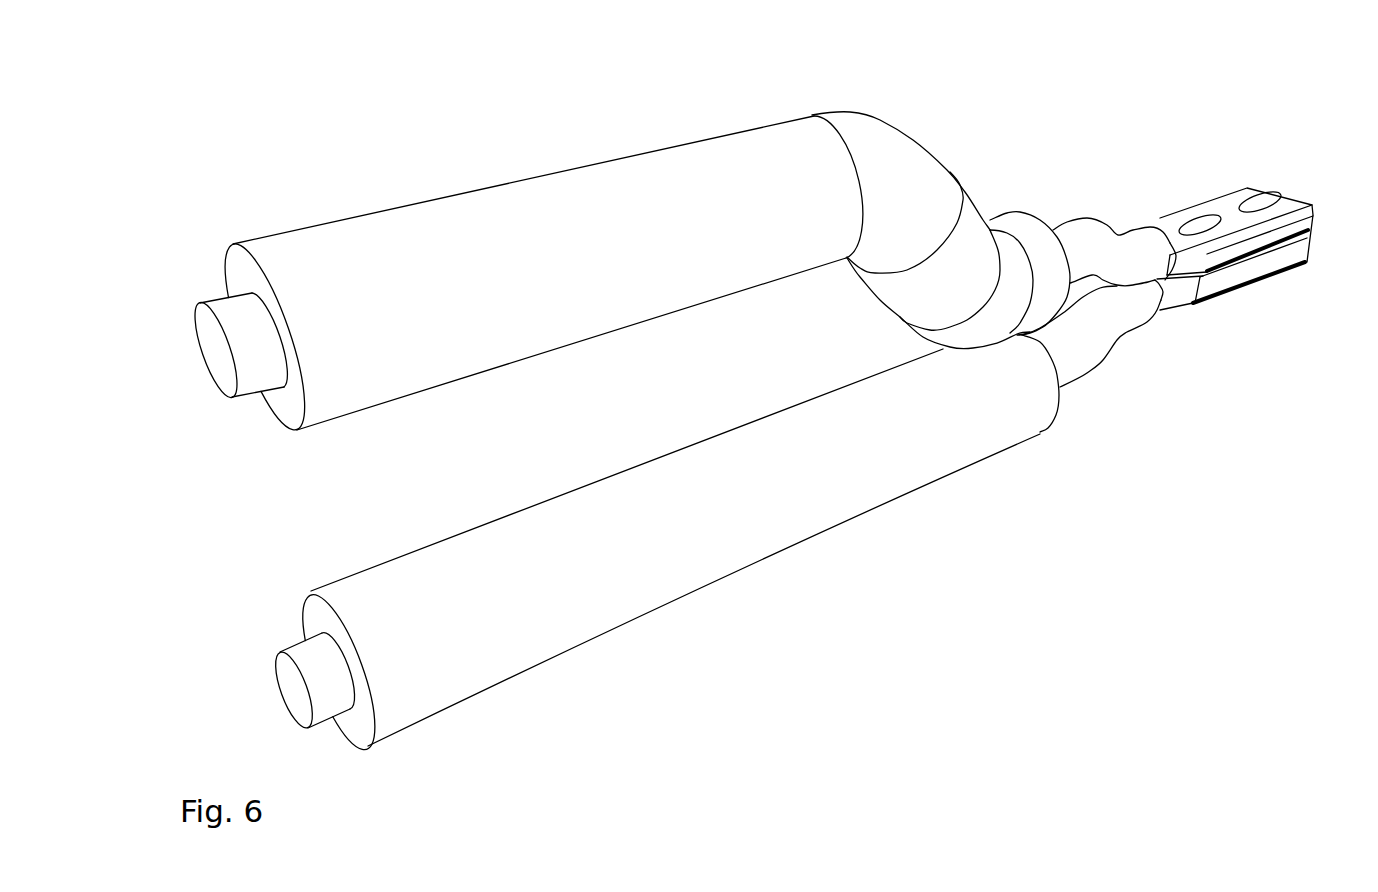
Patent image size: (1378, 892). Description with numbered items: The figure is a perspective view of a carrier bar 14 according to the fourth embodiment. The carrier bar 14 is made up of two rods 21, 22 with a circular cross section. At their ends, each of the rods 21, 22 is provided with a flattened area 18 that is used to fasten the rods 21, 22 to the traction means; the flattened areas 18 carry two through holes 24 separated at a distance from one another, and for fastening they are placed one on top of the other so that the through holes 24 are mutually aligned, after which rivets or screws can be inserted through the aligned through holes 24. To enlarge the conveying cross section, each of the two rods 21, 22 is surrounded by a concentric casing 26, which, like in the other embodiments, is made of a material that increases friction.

The carrier bar 14 is at (767, 430).
The flattened area 18 is at (1265, 235).
The rod 21 is at (307, 655).
The rod 22 is at (222, 370).
The through hole 24 is at (1200, 226).
The casing 26 is at (238, 273).